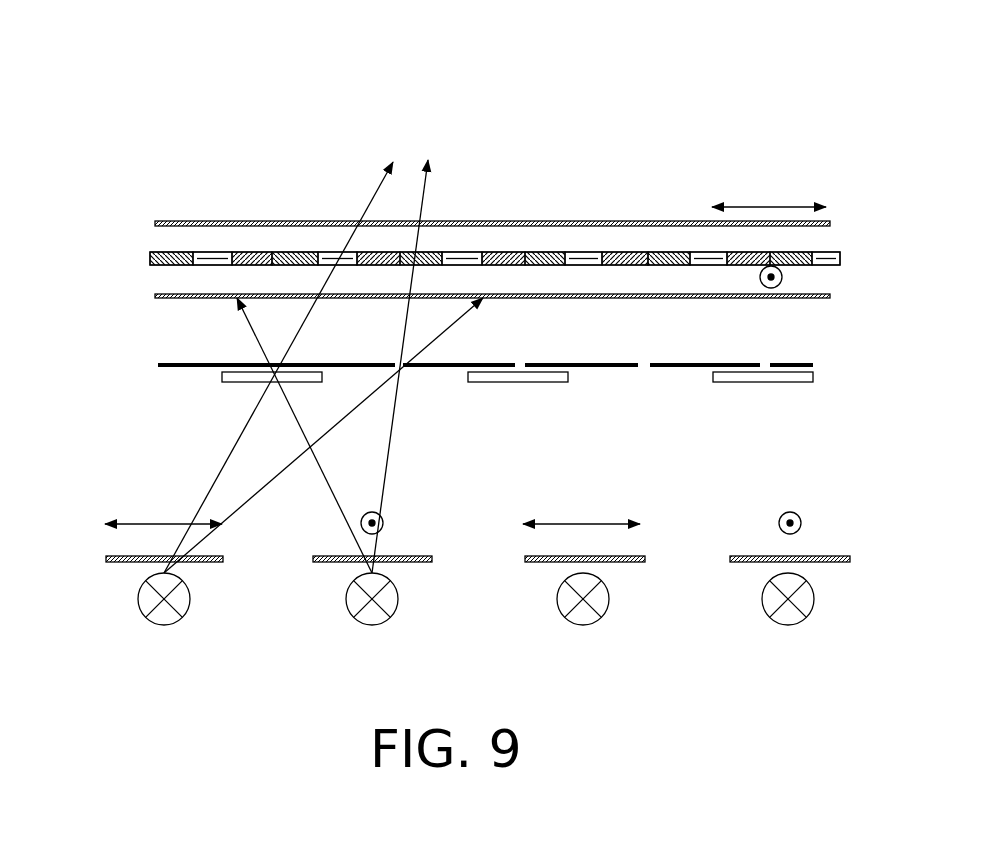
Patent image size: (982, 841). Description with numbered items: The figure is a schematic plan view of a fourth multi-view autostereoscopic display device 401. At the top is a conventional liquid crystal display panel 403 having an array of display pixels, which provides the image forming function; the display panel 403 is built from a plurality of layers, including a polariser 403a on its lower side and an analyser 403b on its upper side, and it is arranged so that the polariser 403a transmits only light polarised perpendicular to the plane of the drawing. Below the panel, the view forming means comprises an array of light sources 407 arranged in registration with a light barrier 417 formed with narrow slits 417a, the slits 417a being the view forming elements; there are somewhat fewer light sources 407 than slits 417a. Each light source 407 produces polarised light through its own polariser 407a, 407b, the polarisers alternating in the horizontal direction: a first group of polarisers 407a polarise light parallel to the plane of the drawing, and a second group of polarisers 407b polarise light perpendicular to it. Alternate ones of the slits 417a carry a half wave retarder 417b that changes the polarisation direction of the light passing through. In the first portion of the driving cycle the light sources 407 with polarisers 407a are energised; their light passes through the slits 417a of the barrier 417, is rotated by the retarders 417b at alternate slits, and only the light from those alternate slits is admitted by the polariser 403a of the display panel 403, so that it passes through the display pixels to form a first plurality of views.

The multi-view autostereoscopic display device 401 is at (560, 90).
The liquid crystal display panel 403 is at (125, 273).
The polariser 403a is at (710, 299).
The analyser 403b is at (493, 220).
The light barrier 417 is at (125, 408).
The slits 417a is at (644, 370).
The half wave retarder 417b is at (763, 383).
The light sources 407 is at (125, 595).
The polariser 407a is at (212, 565).
The polariser 407b is at (423, 565).